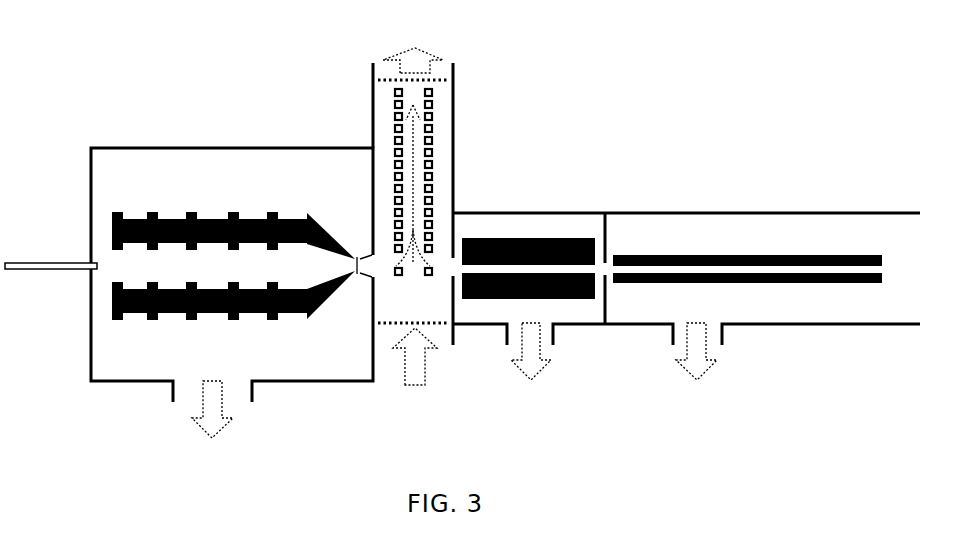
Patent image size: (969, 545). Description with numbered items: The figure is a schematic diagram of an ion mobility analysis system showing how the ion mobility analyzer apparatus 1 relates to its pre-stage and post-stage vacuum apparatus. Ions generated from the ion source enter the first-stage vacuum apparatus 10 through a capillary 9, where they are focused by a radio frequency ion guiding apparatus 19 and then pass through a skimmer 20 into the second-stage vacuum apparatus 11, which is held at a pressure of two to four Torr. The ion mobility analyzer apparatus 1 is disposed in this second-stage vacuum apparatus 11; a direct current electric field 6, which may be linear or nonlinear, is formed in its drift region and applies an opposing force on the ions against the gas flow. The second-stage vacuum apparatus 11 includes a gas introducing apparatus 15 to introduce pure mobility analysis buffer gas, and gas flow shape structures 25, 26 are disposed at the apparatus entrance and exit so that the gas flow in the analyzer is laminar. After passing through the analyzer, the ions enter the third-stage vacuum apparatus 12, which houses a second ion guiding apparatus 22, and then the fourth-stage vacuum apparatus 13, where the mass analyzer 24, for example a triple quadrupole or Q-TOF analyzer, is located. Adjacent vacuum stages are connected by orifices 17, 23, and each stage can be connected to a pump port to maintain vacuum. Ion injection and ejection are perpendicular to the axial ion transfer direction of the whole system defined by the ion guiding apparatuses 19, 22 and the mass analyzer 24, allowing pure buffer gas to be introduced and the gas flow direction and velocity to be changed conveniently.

The ion mobility analyzer apparatus 1 is at (442, 172).
The direct current electric field 6 is at (413, 204).
The capillary 9 is at (51, 255).
The first-stage vacuum apparatus 10 is at (229, 170).
The second-stage vacuum apparatus 11 is at (412, 304).
The third-stage vacuum apparatus 12 is at (527, 230).
The fourth-stage vacuum apparatus 13 is at (744, 228).
The gas introducing apparatus 15 is at (454, 380).
The orifice 17 is at (455, 235).
The radio frequency ion guiding apparatus 19 is at (273, 213).
The skimmer 20 is at (370, 252).
The second ion guiding apparatus 22 is at (567, 236).
The orifice 23 is at (607, 248).
The mass analyzer 24 is at (808, 254).
The gas flow shape structure 25 is at (444, 78).
The gas flow shape structure 26 is at (437, 330).